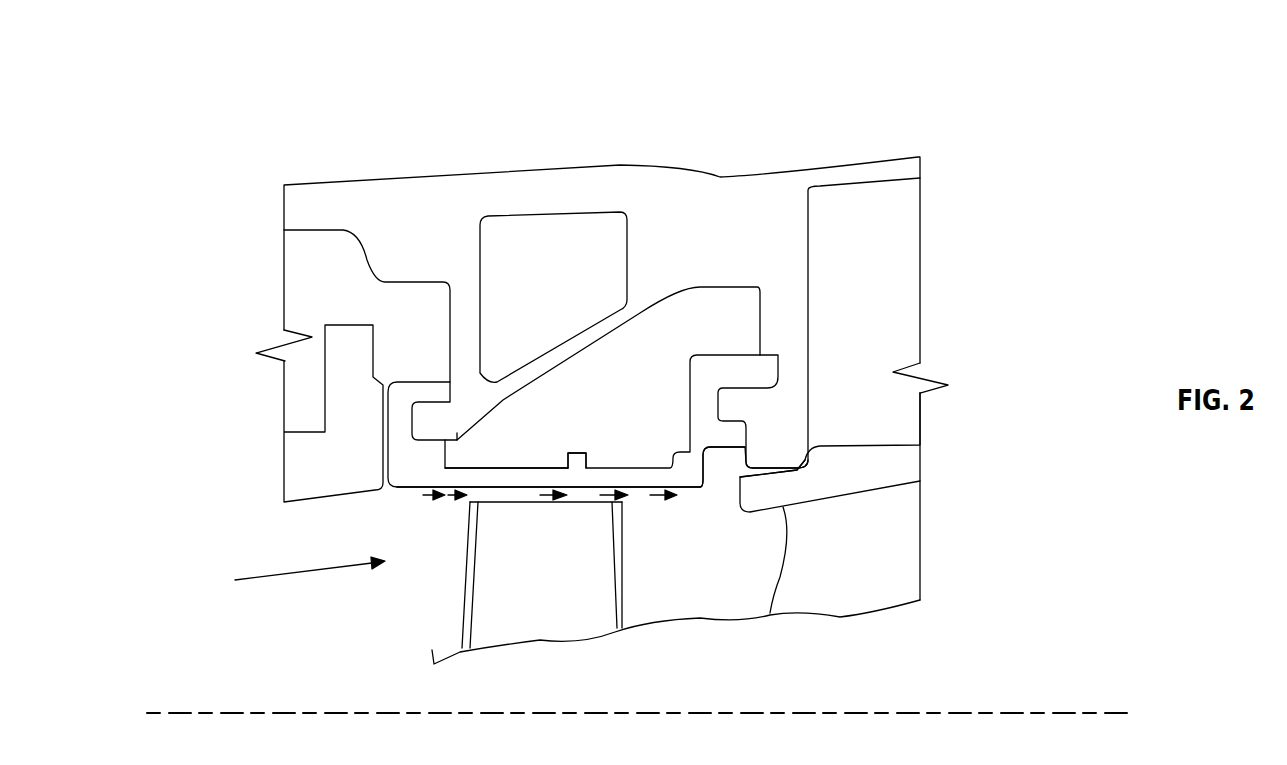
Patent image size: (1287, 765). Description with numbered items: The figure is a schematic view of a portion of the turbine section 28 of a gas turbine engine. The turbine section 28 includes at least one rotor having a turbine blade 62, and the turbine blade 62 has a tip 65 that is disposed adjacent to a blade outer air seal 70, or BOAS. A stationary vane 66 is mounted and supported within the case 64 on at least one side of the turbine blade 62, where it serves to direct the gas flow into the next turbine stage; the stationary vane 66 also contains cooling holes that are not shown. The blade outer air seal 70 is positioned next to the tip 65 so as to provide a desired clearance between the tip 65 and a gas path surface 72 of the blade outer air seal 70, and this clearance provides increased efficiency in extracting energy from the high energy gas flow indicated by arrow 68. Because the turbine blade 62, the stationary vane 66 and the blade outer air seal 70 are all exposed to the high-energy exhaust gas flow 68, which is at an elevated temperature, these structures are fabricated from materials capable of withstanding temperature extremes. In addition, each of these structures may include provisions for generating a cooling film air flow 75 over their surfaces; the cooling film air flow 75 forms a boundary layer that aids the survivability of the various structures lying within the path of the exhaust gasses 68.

The turbine section 28 is at (862, 66).
The turbine blade 62 is at (614, 600).
The case 64 is at (695, 198).
The tip 65 is at (542, 470).
The stationary vane 66 is at (907, 580).
The high energy gas flow 68 is at (310, 577).
The blade outer air seal 70 is at (497, 477).
The gas path surface 72 is at (661, 508).
The cooling film air flow 75 is at (406, 493).